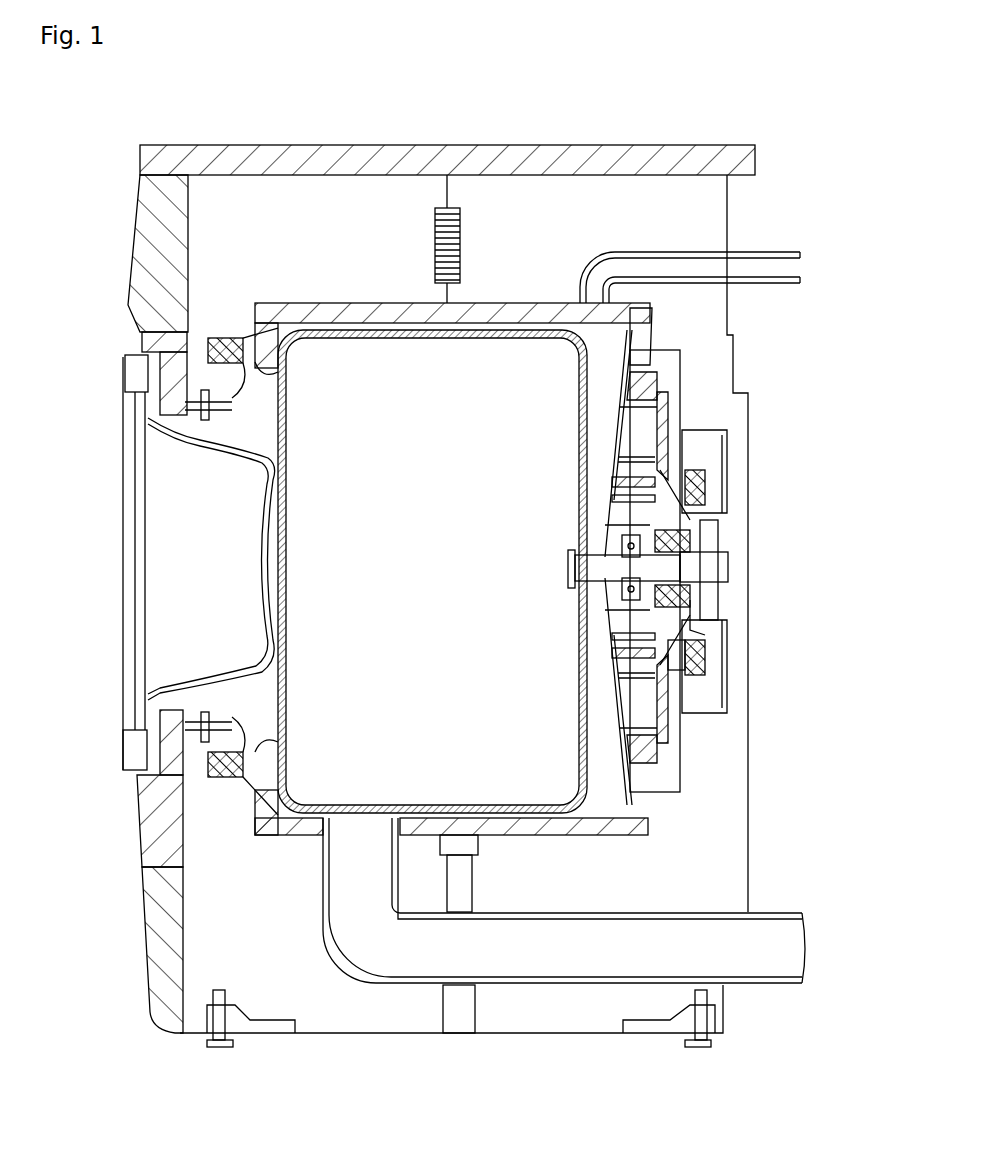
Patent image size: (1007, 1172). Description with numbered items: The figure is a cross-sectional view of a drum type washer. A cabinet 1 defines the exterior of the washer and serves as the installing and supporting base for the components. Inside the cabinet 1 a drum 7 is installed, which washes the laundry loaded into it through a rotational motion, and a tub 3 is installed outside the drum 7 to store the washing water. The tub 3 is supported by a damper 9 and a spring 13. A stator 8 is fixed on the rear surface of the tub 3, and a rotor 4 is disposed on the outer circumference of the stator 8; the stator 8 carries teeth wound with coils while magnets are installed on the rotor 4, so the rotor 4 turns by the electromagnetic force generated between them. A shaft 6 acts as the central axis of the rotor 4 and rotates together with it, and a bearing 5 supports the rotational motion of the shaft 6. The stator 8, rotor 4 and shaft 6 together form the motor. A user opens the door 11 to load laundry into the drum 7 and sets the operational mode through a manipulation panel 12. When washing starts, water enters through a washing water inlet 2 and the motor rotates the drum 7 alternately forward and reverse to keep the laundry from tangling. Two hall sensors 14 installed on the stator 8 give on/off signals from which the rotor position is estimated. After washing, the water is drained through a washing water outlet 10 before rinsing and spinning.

The cabinet 1 is at (728, 218).
The washing water inlet 2 is at (577, 293).
The tub 3 is at (657, 390).
The rotor 4 is at (727, 453).
The bearing 5 is at (698, 545).
The shaft 6 is at (712, 520).
The drum 7 is at (330, 353).
The stator 8 is at (705, 628).
The damper 9 is at (463, 1005).
The washing water outlet 10 is at (320, 850).
The door 11 is at (130, 557).
The manipulation panel 12 is at (150, 243).
The spring 13 is at (435, 238).
The hall sensors 14 is at (700, 655).